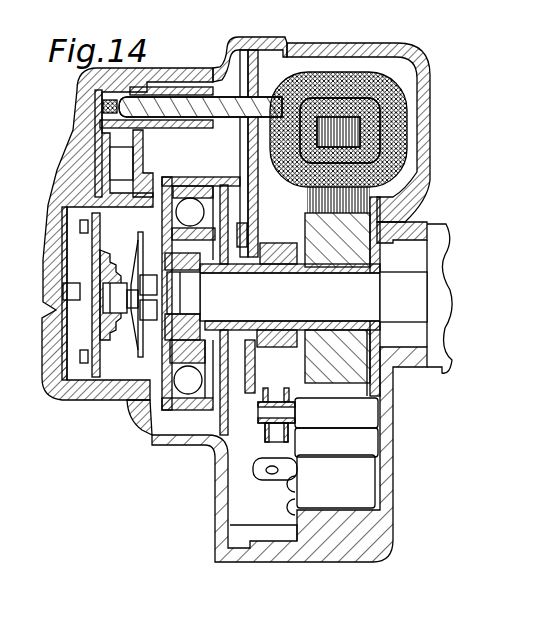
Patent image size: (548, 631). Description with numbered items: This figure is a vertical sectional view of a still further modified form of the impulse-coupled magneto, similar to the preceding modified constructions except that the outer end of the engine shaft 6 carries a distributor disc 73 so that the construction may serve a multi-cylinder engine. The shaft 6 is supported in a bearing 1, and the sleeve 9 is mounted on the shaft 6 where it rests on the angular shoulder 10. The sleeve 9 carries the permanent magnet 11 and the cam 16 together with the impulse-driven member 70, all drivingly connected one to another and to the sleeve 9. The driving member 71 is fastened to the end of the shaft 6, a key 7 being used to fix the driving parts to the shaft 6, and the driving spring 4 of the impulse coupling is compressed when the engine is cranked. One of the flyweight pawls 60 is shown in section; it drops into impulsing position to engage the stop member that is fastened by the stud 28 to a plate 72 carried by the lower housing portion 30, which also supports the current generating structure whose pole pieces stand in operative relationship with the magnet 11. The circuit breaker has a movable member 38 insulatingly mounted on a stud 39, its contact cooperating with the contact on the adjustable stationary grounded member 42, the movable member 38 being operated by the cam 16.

The bearing 1 is at (407, 268).
The driving spring 4 is at (190, 212).
The engine shaft 6 is at (353, 302).
The key 7 is at (168, 278).
The sleeve 9 is at (283, 268).
The shoulder 10 is at (380, 268).
The permanent magnet 11 is at (347, 363).
The cam 16 is at (286, 342).
The stud 28 is at (240, 232).
The lower housing portion 30 is at (423, 82).
The movable member of circuit breaker 38 is at (262, 435).
The stud 39 is at (258, 420).
The adjustable stationary grounded member 42 is at (297, 525).
The flyweight pawl 60 is at (238, 178).
The impulse-driven member 70 is at (197, 405).
The driving member 71 is at (167, 418).
The plate 72 is at (262, 60).
The distributor disc 73 is at (105, 362).